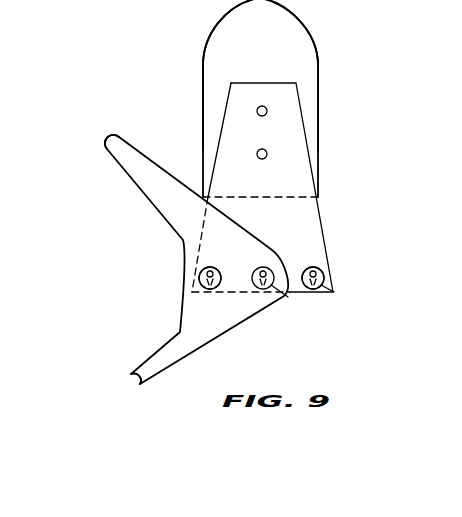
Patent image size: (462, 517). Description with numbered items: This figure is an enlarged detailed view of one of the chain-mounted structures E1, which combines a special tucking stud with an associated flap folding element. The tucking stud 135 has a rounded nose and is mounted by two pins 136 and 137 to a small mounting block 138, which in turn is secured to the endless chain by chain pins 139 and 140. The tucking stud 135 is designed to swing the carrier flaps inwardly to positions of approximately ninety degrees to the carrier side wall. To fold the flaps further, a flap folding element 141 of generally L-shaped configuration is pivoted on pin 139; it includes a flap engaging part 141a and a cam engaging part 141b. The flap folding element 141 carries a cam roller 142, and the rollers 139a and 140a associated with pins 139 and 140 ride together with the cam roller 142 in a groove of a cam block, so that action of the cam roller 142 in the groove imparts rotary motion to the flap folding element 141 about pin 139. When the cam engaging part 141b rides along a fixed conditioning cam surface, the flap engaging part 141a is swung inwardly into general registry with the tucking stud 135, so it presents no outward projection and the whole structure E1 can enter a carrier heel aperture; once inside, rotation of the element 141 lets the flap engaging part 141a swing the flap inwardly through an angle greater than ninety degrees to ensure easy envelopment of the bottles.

The tucking stud and flap folding structure E1 is at (348, 81).
The tucking stud 135 is at (293, 40).
The pin 136 is at (257, 109).
The pin 137 is at (257, 153).
The mounting block 138 is at (300, 213).
The chain pin 139 is at (220, 286).
The roller 139a is at (204, 277).
The chain pin 140 is at (336, 293).
The roller 140a is at (321, 270).
The flap folding element 141 is at (224, 321).
The flap engaging part 141a is at (124, 153).
The cam engaging part 141b is at (150, 372).
The cam roller 142 is at (286, 296).